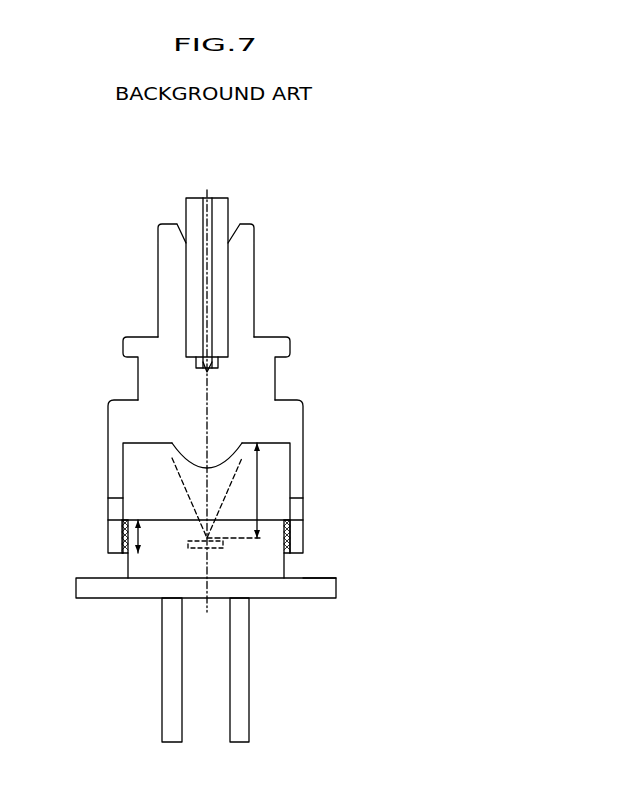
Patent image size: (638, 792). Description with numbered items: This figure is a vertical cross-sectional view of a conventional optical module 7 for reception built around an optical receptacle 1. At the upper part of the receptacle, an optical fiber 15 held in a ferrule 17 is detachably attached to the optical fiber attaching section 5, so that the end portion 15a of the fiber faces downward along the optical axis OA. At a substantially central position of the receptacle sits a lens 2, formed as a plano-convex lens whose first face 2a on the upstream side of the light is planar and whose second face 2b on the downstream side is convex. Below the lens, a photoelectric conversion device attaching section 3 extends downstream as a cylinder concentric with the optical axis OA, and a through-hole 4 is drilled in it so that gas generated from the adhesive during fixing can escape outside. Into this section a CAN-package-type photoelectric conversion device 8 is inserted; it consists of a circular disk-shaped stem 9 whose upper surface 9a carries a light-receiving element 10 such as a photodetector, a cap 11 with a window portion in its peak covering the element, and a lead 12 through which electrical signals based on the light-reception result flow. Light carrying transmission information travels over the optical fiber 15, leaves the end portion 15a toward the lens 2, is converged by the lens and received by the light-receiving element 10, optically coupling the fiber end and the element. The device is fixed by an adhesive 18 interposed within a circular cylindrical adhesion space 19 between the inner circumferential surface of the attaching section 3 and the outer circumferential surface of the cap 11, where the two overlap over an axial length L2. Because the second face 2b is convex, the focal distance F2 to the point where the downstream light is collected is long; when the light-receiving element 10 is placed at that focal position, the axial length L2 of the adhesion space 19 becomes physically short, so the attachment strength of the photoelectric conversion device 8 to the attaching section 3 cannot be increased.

The optical module 7 is at (84, 243).
The optical receptacle 1 is at (158, 271).
The optical fiber attaching section 5 is at (158, 310).
The optical fiber 15 is at (213, 278).
The end portion of the optical fiber 15a is at (213, 368).
The ferrule 17 is at (228, 312).
The lens 2 is at (53, 430).
The first face 2a is at (196, 362).
The second face 2b is at (170, 456).
The optical axis OA is at (210, 420).
The photoelectric conversion device attaching section 3 is at (108, 485).
The through-hole 4 is at (120, 511).
The adhesive 18 is at (122, 540).
The adhesion space 19 is at (308, 520).
The light-receiving element 10 is at (200, 534).
The focal distance F2 is at (257, 490).
The axial length of the adhesion space L2 is at (150, 536).
The photoelectric conversion device 8 is at (74, 588).
The stem 9 is at (91, 600).
The top surface of base plate 9a is at (337, 578).
The cap 11 is at (268, 568).
The lead 12 is at (162, 680).